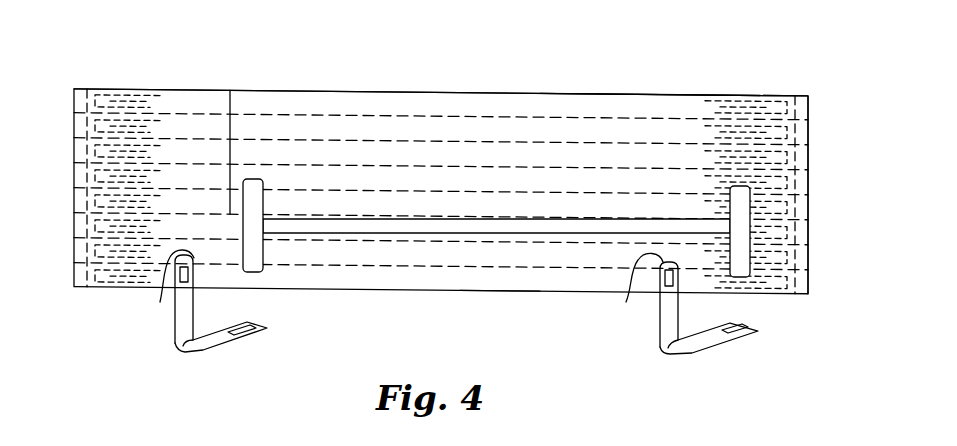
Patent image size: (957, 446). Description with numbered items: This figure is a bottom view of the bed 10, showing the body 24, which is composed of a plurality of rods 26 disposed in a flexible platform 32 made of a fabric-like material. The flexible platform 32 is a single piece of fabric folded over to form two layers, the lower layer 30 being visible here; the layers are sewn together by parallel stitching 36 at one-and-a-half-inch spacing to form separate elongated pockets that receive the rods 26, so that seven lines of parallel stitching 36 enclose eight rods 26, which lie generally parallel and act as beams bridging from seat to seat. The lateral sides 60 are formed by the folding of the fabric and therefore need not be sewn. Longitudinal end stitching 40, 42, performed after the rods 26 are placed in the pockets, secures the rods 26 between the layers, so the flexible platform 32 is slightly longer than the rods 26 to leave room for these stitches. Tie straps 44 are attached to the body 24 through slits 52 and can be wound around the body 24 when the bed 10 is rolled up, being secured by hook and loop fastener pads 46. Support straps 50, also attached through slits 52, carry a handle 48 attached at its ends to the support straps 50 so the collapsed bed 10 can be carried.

The bed 10 is at (488, 74).
The body 24 is at (724, 98).
The rods 26 is at (126, 115).
The layer 30 is at (397, 101).
The flexible platform 32 is at (671, 97).
The parallel stitching 36 is at (227, 213).
The longitudinal end stitching 40 is at (797, 160).
The longitudinal end stitching 42 is at (88, 155).
The tie straps 44 is at (218, 338).
The hook and loop fastener pads 46 is at (188, 272).
The handle 48 is at (467, 233).
The support straps 50 is at (250, 178).
The slits 52 is at (268, 178).
The lateral sides 60 is at (586, 93).